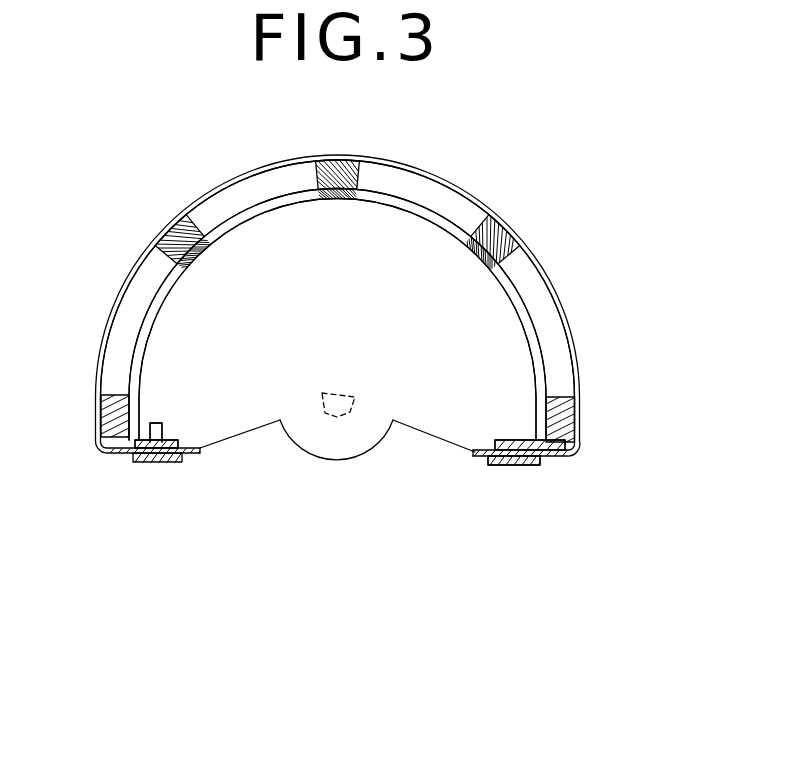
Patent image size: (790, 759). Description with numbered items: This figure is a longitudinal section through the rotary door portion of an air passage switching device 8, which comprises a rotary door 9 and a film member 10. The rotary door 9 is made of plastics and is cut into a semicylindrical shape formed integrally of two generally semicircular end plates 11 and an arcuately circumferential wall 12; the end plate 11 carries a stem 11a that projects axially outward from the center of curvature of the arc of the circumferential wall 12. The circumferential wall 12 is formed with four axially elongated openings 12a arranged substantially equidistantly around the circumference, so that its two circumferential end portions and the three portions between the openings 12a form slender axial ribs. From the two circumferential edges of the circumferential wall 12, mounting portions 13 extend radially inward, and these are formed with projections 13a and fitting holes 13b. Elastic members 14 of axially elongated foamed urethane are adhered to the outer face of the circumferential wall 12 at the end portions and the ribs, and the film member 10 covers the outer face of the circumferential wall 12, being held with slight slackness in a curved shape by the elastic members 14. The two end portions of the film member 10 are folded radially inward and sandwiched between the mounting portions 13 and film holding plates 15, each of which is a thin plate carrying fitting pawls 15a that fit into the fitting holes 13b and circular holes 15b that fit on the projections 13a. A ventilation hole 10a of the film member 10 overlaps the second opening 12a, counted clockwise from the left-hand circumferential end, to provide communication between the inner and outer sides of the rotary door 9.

The air passage switching device 8 is at (592, 340).
The rotary door 9 is at (395, 435).
The film member 10 is at (452, 182).
The ventilation hole 10a is at (238, 178).
The end plate 11 is at (258, 408).
The stem 11a is at (335, 417).
The circumferential wall 12 is at (383, 178).
The opening 12a is at (275, 200).
The mounting portion 13 is at (173, 437).
The projection 13a is at (510, 467).
The fitting hole 13b is at (170, 465).
The elastic member 14 is at (162, 230).
The film holding plate 15 is at (145, 465).
The fitting pawl 15a is at (162, 423).
The circular hole 15b is at (518, 467).